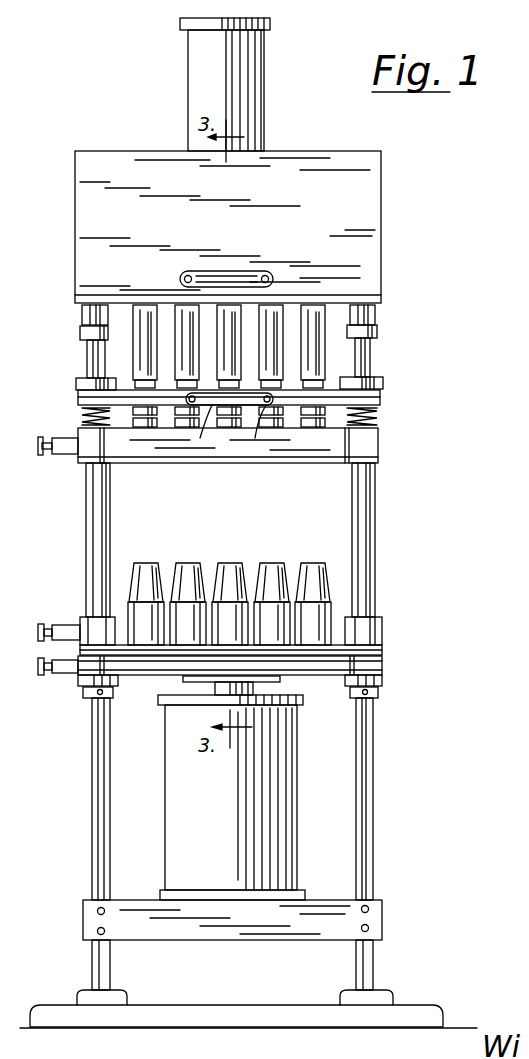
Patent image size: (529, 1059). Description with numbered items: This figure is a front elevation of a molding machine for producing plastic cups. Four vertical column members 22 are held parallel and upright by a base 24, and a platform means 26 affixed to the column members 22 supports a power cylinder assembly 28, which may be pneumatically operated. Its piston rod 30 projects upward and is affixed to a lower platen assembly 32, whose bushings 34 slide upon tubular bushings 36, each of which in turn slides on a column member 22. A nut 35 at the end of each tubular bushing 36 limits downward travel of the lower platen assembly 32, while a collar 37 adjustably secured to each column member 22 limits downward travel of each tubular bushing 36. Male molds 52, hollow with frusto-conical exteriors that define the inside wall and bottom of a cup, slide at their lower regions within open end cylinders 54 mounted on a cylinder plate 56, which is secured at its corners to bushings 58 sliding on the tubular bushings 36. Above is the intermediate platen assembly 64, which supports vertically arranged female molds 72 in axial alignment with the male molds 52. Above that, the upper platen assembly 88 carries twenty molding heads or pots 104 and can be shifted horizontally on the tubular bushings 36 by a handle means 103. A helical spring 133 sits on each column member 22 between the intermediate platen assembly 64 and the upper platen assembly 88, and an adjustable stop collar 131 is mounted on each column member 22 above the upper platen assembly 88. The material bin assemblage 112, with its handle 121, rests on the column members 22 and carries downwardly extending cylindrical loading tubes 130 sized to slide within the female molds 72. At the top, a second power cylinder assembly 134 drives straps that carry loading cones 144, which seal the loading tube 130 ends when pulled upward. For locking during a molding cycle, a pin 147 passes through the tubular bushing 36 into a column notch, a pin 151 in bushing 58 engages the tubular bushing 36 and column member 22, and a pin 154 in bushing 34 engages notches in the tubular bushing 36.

The column members 22 is at (86, 353).
The base 24 is at (163, 1005).
The platform means 26 is at (282, 932).
The power cylinder assembly 28 is at (297, 826).
The piston rod 30 is at (262, 684).
The lower platen assembly 32 is at (386, 662).
The bushings 34 is at (384, 680).
The nut 35 is at (78, 686).
The tubular bushing 36 is at (88, 538).
The collar 37 is at (378, 694).
The male mold 52 is at (190, 562).
The open end cylinder 54 is at (330, 612).
The cylinder plate 56 is at (383, 648).
The bushing 58 is at (372, 622).
The intermediate platen assembly 64 is at (384, 450).
The female molds 72 is at (82, 416).
The upper platen assembly 88 is at (388, 388).
The handle means 103 is at (203, 433).
The molding heads 104 is at (272, 433).
The material bin assemblage 112 is at (386, 232).
The handle 121 is at (238, 277).
The loading tube 130 is at (316, 312).
The adjustable stop collar 131 is at (80, 332).
The helical spring 133 is at (377, 414).
The power cylinder assembly 134 is at (190, 80).
The loading cone 144 is at (350, 380).
The pin 147 is at (48, 452).
The pin 151 is at (40, 632).
The pin 154 is at (40, 672).